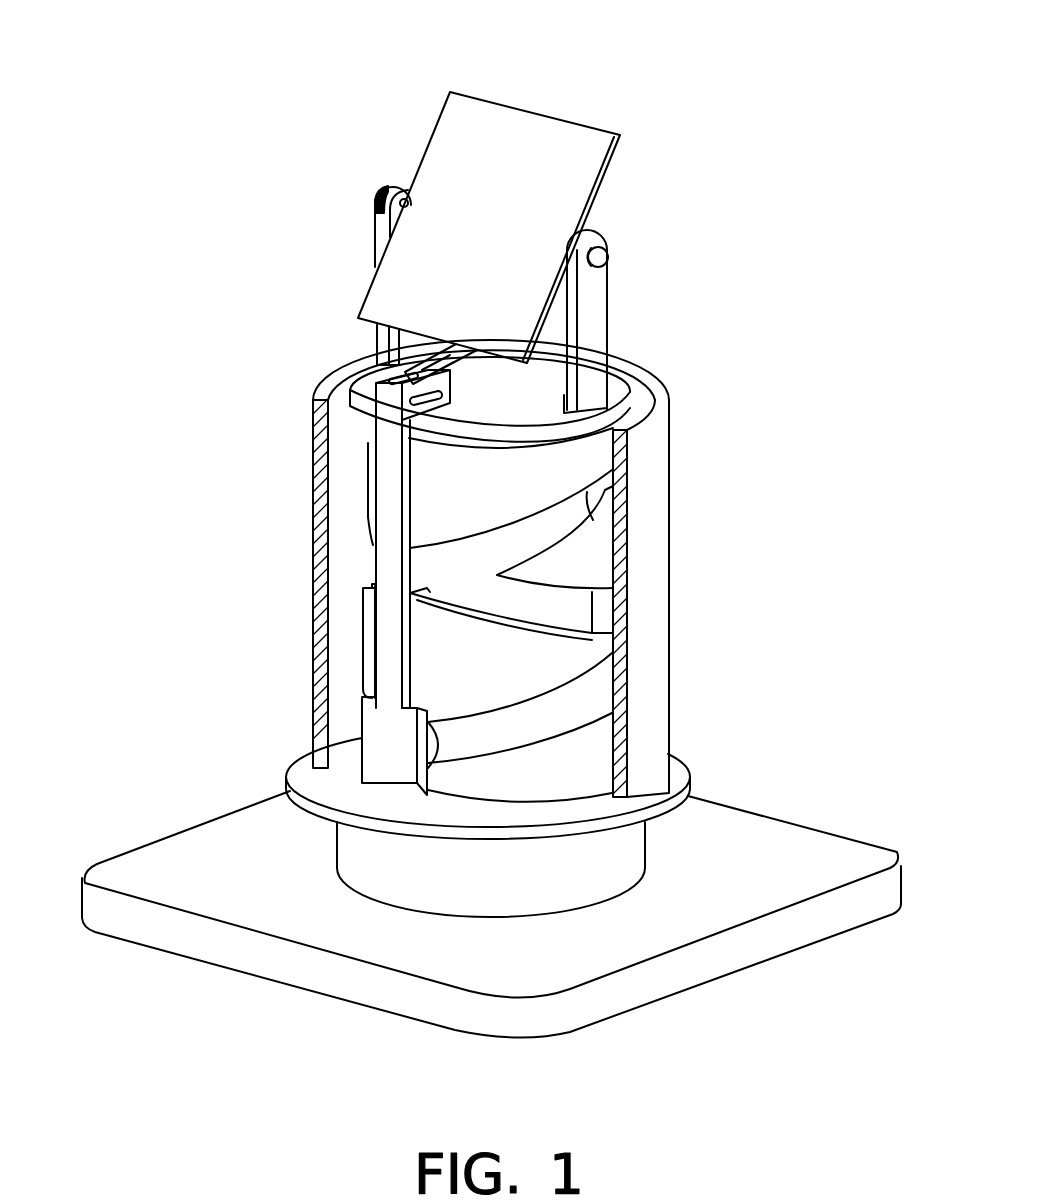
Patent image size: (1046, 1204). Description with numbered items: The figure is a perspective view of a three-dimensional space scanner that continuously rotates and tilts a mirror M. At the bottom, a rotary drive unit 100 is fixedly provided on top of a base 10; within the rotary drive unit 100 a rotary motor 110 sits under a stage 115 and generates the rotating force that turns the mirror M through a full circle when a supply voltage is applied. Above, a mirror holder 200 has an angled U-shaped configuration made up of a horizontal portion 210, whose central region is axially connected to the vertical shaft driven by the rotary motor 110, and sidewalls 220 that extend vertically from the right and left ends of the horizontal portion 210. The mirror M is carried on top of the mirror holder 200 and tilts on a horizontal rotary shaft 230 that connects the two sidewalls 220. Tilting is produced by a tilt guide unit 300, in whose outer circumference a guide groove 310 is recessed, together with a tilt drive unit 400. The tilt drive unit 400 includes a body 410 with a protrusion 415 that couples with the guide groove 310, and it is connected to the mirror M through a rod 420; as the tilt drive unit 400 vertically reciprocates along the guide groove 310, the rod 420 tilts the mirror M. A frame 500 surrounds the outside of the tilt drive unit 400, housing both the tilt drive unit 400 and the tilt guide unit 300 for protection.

The mirror M is at (531, 130).
The base 10 is at (436, 955).
The rotary drive unit 100 is at (658, 849).
The rotary motor 110 is at (371, 865).
The stage 115 is at (690, 762).
The mirror holder 200 is at (620, 299).
The horizontal portion 210 is at (613, 366).
The sidewalls 220 is at (600, 297).
The horizontal rotary shaft 230 is at (607, 257).
The tilt guide unit 300 is at (368, 625).
The guide groove 310 is at (432, 565).
The tilt drive unit 400 is at (282, 569).
The body 410 is at (385, 752).
The protrusion 415 is at (372, 766).
The rod 420 is at (385, 658).
The frame 500 is at (652, 481).